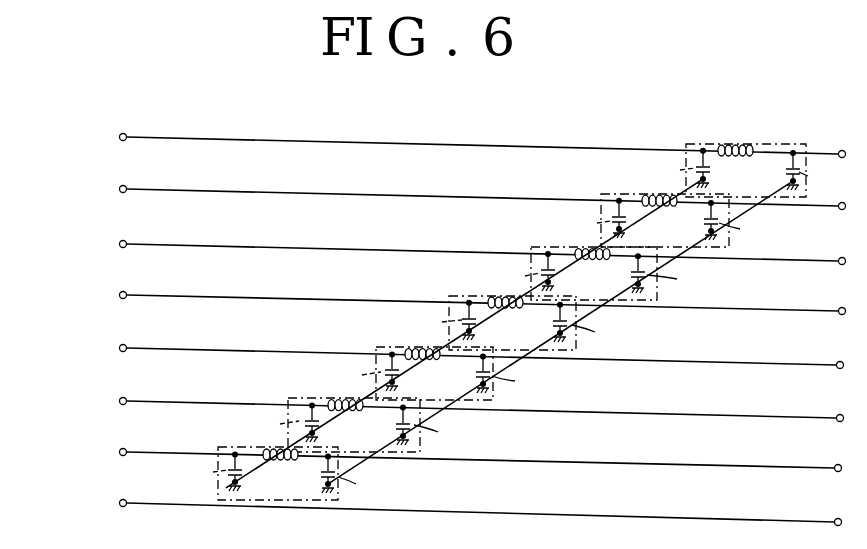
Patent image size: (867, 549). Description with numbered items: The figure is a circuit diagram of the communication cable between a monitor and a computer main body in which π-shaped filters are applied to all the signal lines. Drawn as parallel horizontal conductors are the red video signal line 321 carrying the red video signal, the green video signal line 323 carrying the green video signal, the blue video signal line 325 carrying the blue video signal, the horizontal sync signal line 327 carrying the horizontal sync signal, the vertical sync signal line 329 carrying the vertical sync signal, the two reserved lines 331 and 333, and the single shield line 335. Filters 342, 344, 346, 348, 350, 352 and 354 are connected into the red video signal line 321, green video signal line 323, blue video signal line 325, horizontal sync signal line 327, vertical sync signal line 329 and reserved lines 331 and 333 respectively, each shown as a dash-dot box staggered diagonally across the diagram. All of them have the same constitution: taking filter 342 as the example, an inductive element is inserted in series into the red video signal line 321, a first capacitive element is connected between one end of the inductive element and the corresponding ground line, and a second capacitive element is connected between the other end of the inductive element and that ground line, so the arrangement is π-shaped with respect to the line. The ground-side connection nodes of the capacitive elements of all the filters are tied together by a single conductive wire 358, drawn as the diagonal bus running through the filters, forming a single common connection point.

The red video signal line 321 is at (474, 132).
The green video signal line 323 is at (474, 184).
The blue video signal line 325 is at (474, 239).
The horizontal sync signal line 327 is at (472, 290).
The vertical sync signal line 329 is at (471, 344).
The reserved line 331 is at (429, 397).
The reserved line 333 is at (428, 447).
The shield line 335 is at (436, 500).
The filter 342 is at (716, 142).
The filter 344 is at (620, 193).
The filter 346 is at (549, 246).
The filter 348 is at (470, 296).
The filter 350 is at (403, 344).
The filter 352 is at (305, 396).
The filter 354 is at (248, 446).
The conductive wire 358 is at (442, 338).